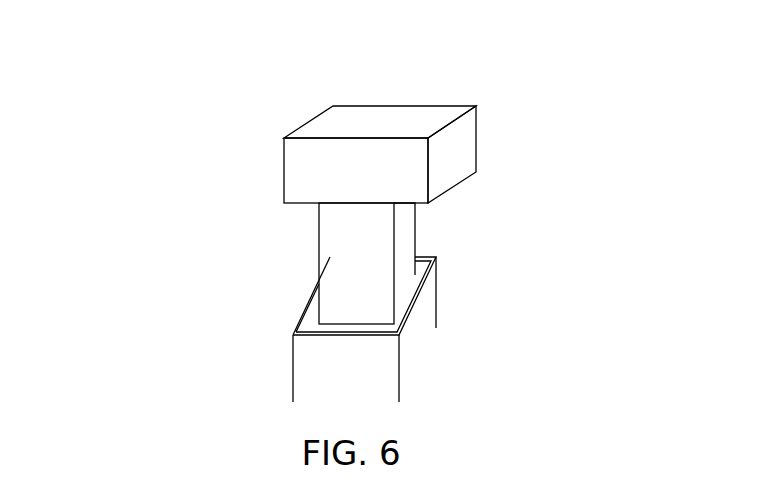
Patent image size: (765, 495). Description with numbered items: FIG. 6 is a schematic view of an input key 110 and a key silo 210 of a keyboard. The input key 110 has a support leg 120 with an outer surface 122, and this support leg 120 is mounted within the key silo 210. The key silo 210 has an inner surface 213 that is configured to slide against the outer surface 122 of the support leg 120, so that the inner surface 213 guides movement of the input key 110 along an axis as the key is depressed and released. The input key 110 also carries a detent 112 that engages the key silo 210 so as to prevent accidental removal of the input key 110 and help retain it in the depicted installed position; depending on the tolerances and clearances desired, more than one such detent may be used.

The input key 110 is at (284, 121).
The detent 112 is at (388, 117).
The support leg 120 is at (359, 263).
The outer surface 122 is at (400, 240).
The key silo 210 is at (373, 329).
The inner surface 213 is at (308, 328).